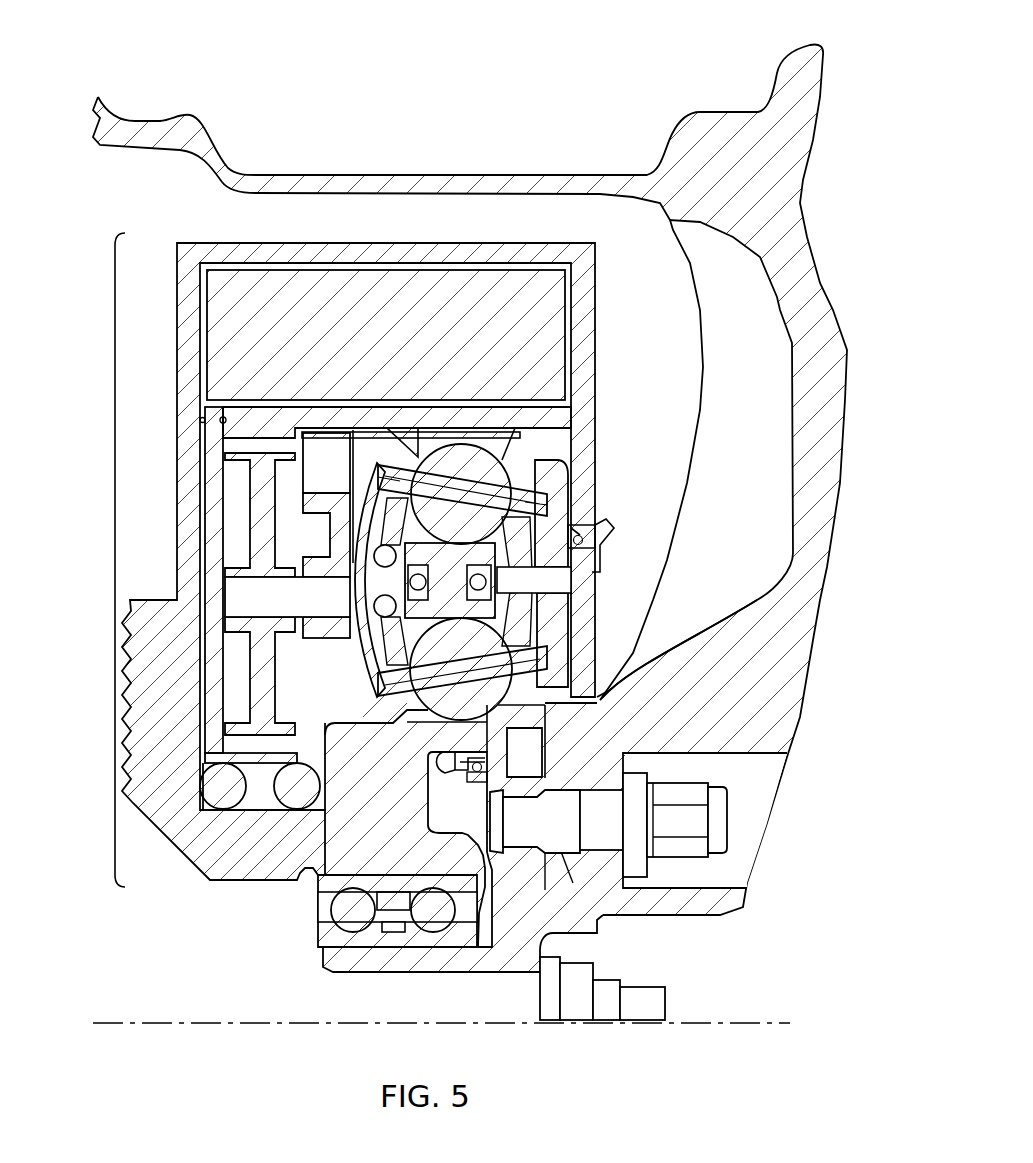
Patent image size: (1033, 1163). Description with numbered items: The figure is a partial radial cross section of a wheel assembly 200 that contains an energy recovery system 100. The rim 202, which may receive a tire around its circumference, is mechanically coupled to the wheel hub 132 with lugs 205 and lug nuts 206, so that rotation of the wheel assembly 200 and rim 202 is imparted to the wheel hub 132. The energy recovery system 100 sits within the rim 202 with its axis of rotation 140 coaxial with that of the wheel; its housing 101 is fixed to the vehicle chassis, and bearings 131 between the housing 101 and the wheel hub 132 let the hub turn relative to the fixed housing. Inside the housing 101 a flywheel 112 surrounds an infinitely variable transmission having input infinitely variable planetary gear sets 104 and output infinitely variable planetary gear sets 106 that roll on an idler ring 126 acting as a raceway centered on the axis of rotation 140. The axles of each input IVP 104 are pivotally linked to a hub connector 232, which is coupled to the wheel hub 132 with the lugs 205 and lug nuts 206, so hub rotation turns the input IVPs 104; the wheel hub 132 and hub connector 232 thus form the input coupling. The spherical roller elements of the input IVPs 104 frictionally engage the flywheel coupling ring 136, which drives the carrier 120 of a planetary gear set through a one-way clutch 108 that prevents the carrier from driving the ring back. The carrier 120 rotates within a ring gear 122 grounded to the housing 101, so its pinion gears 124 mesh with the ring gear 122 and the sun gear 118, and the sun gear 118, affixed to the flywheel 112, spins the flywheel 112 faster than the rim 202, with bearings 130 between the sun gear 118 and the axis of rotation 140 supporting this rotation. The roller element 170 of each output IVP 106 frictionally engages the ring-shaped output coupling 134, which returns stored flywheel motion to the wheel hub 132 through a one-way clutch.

The energy recovery system 100 is at (114, 560).
The housing 101 is at (177, 266).
The input infinitely variable planetary gear set 104 is at (513, 462).
The output infinitely variable planetary gear set 106 is at (516, 686).
The one-way clutch 108 is at (310, 468).
The flywheel 112 is at (432, 267).
The sun gear 118 is at (258, 790).
The carrier 120 is at (330, 520).
The ring gear 122 is at (222, 418).
The pinion gears 124 is at (248, 548).
The idler ring 126 is at (380, 640).
The bearings 130 is at (200, 808).
The bearings 131 is at (357, 930).
The wheel hub 132 is at (490, 974).
The output coupling 134 is at (533, 720).
The flywheel coupling ring 136 is at (357, 432).
The axis of rotation 140 is at (750, 1022).
The roller element 170 is at (612, 523).
The wheel assembly 200 is at (608, 96).
The rim 202 is at (426, 175).
The lugs 205 is at (553, 840).
The lug nuts 206 is at (730, 827).
The hub connector 232 is at (563, 483).